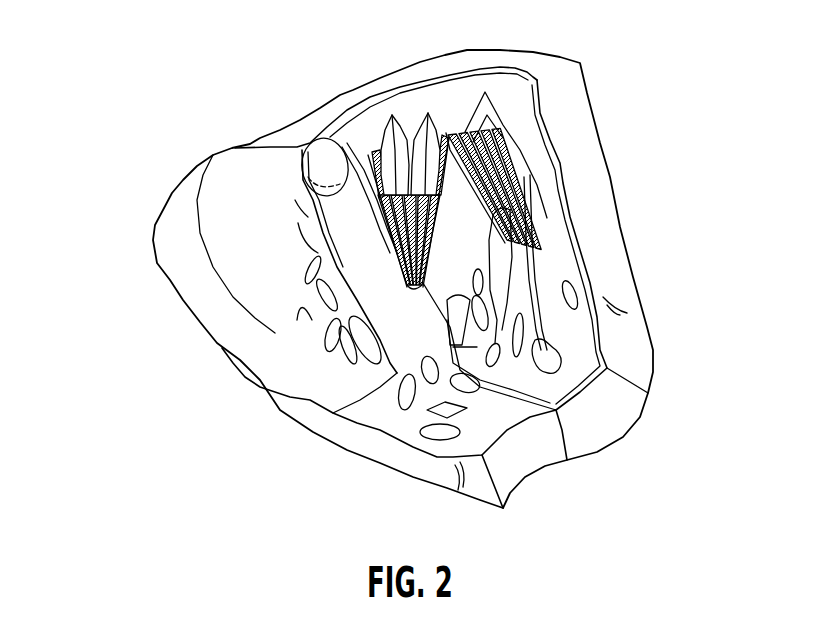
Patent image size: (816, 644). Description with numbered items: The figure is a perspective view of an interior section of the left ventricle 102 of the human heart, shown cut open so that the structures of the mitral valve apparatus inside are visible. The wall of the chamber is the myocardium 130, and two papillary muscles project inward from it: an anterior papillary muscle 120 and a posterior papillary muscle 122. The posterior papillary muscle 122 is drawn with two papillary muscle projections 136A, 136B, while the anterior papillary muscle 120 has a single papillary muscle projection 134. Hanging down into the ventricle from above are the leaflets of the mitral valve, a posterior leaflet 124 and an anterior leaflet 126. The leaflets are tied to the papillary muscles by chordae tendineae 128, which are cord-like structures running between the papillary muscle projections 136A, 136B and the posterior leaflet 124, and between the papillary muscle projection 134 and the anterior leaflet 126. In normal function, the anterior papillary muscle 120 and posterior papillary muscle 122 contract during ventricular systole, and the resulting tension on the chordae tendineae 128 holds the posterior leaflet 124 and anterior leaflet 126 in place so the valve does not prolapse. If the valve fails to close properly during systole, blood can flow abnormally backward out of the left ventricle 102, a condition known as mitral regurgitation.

The left ventricle 102 is at (170, 320).
The anterior papillary muscle 120 is at (373, 400).
The posterior papillary muscle 122 is at (547, 292).
The posterior leaflet 124 is at (500, 92).
The anterior leaflet 126 is at (357, 143).
The chordae tendineae 128 is at (527, 172).
The myocardium 130 is at (450, 457).
The papillary muscle projection 134 is at (410, 290).
The papillary muscle projection 136A is at (522, 246).
The papillary muscle projection 136B is at (537, 215).